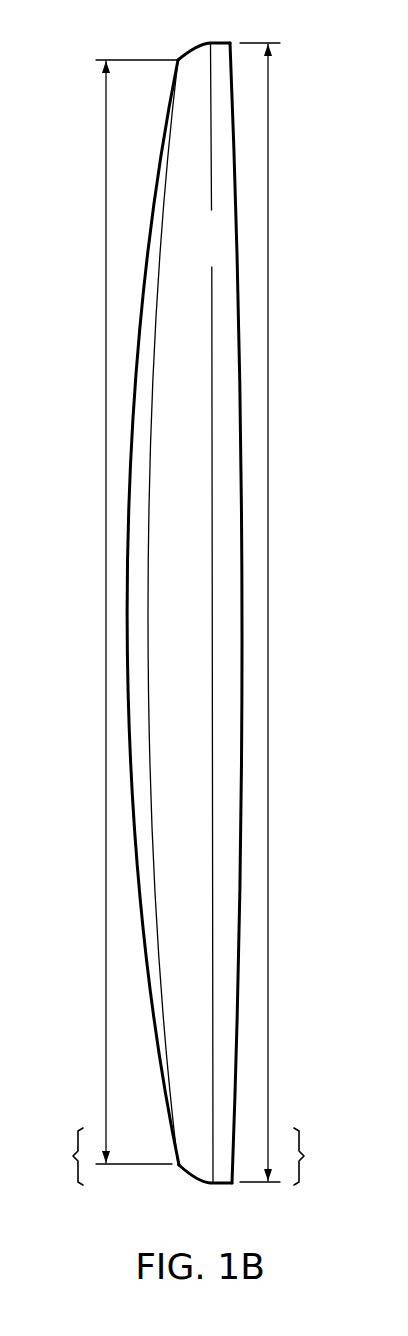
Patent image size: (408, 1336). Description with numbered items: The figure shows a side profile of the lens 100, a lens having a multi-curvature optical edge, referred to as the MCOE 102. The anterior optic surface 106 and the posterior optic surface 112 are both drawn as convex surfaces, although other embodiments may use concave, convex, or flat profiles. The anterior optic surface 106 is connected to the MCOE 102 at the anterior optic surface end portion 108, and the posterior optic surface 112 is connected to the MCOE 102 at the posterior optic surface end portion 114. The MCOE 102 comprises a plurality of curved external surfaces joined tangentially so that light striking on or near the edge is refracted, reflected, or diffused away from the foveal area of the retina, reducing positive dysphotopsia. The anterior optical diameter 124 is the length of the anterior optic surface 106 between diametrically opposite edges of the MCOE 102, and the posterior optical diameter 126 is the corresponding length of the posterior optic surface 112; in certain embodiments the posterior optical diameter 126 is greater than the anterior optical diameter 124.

The lens 100 is at (182, 618).
The MCOE 102 is at (198, 49).
The anterior optic surface 106 is at (126, 612).
The anterior optic surface end portion 108 is at (54, 1156).
The posterior optic surface 112 is at (242, 612).
The posterior optic surface end portion 114 is at (324, 1156).
The anterior optical diameter 124 is at (105, 658).
The posterior optical diameter 126 is at (268, 658).